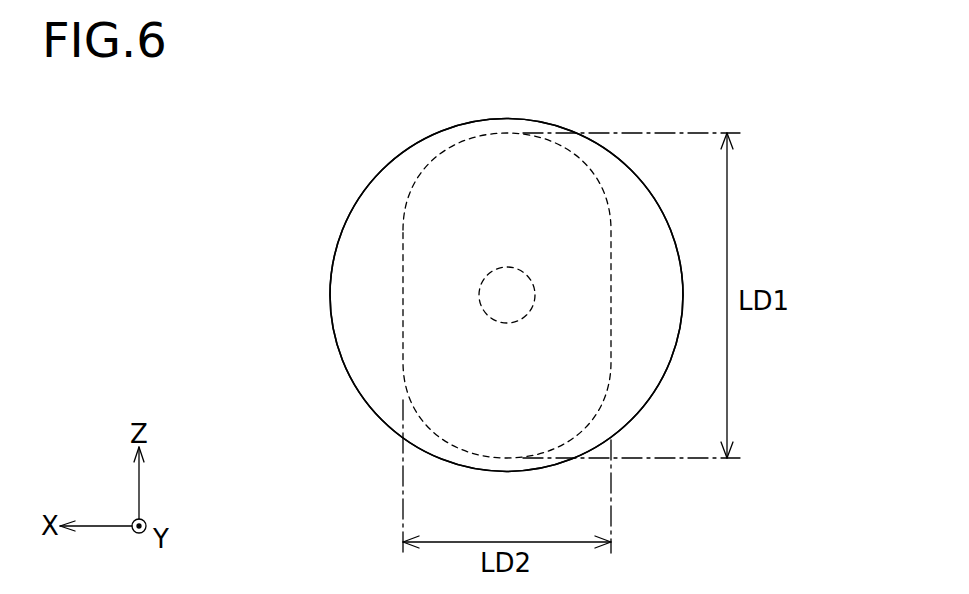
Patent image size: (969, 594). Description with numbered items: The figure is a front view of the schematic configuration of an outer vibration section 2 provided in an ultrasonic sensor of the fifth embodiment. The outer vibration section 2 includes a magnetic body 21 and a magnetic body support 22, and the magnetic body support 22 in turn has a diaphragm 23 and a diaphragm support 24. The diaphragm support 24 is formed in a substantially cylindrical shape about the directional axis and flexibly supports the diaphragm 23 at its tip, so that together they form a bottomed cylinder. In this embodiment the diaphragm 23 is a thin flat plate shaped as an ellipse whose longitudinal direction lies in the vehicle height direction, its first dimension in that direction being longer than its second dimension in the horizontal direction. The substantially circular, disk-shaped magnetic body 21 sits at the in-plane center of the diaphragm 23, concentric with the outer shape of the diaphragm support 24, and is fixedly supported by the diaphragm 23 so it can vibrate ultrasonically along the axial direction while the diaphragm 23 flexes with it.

The outer vibration section 2 is at (304, 104).
The magnetic body 21 is at (507, 323).
The magnetic body support 22 is at (378, 420).
The diaphragm 23 is at (507, 149).
The diaphragm support 24 is at (338, 293).